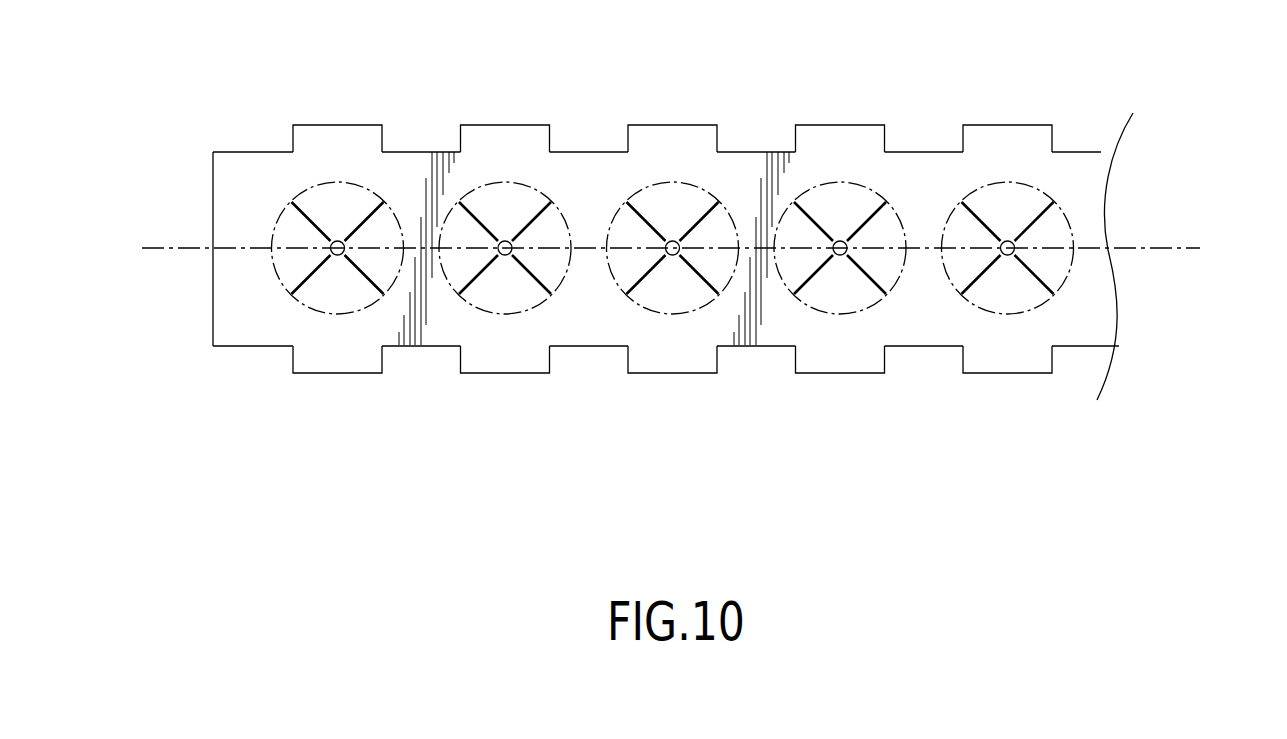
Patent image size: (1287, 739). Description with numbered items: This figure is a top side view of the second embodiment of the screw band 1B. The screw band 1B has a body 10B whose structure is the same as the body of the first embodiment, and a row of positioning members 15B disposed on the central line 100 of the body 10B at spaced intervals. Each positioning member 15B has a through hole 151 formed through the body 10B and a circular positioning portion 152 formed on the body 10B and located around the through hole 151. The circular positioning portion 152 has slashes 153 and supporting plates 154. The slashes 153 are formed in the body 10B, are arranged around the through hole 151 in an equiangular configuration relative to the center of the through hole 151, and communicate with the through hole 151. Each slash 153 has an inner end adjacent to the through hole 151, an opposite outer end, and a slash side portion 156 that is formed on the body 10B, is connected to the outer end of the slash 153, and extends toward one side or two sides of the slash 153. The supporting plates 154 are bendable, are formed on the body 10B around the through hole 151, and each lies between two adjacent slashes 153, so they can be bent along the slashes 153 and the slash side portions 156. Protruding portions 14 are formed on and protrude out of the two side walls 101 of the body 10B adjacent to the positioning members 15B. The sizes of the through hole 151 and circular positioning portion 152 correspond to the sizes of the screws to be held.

The screw band 1B is at (1013, 90).
The body 10B is at (207, 200).
The side walls 101 is at (588, 152).
The protruding portions 14 is at (677, 140).
The positioning members 15B is at (982, 318).
The through hole 151 is at (1008, 257).
The circular positioning portion 152 is at (1063, 283).
The slashes 153 is at (1037, 210).
The supporting plates 154 is at (1000, 197).
The slash side portion 156 is at (1053, 210).
The central line 100 is at (1188, 250).